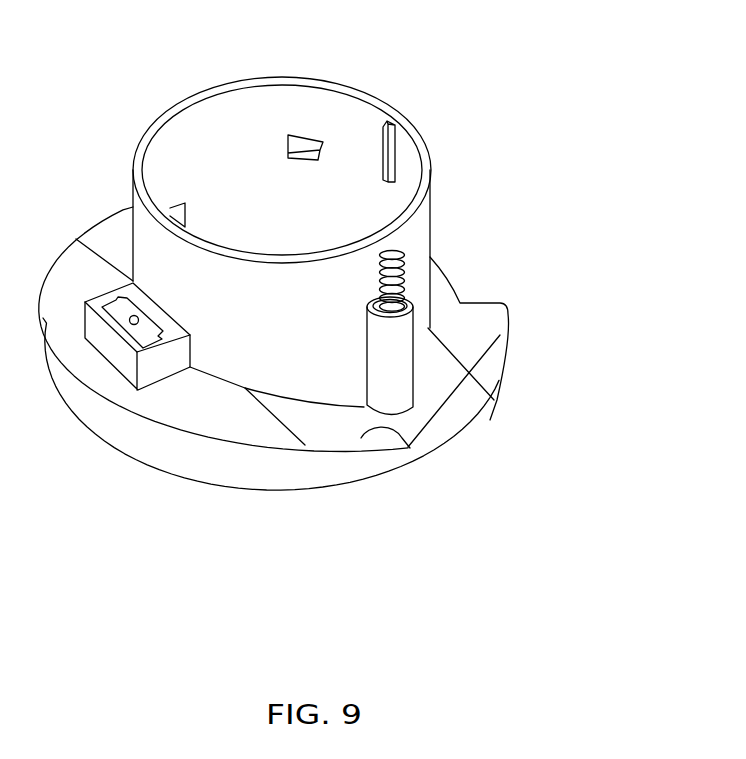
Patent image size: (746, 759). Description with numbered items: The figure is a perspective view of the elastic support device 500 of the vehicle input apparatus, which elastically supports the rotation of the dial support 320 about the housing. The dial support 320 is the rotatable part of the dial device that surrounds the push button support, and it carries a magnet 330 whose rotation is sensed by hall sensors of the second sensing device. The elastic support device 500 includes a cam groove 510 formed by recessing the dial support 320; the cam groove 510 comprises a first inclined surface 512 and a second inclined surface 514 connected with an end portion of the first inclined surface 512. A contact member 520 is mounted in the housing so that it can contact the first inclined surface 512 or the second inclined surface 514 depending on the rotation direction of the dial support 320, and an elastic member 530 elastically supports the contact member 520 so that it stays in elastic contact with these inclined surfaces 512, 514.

The dial support 320 is at (322, 104).
The magnet 330 is at (134, 325).
The elastic support device 500 is at (352, 394).
The cam groove 510 is at (320, 398).
The first inclined surface 512 is at (410, 448).
The second inclined surface 514 is at (493, 400).
The contact member 520 is at (398, 363).
The elastic member 530 is at (409, 252).